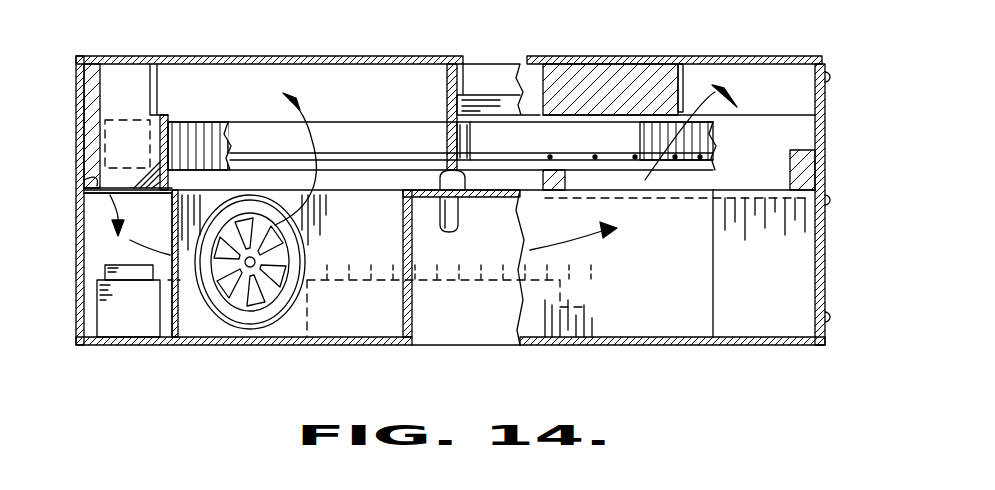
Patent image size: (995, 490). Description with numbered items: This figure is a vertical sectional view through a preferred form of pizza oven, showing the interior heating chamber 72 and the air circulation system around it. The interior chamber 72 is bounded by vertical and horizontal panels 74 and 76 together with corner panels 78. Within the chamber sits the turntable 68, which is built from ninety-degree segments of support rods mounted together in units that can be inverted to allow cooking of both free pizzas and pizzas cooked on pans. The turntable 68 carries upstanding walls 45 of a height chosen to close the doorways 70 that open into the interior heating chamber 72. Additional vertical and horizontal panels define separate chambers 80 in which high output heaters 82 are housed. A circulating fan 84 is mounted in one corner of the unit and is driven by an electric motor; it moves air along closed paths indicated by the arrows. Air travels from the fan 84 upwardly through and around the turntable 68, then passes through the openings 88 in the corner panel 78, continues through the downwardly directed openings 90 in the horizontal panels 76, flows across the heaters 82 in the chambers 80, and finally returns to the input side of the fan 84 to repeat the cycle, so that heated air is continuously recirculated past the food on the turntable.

The vertical panel 74 is at (76, 105).
The horizontal panel 76 is at (340, 346).
The corner panel 78 is at (122, 76).
The opening 88 is at (160, 78).
The turntable 68 is at (360, 108).
The doorway 70 is at (438, 112).
The upstanding wall 45 is at (445, 140).
The downwardly directed opening 90 is at (84, 180).
The chamber 80 is at (93, 248).
The high output heater 82 is at (105, 308).
The circulating fan 84 is at (250, 327).
The interior heating chamber 72 is at (338, 104).